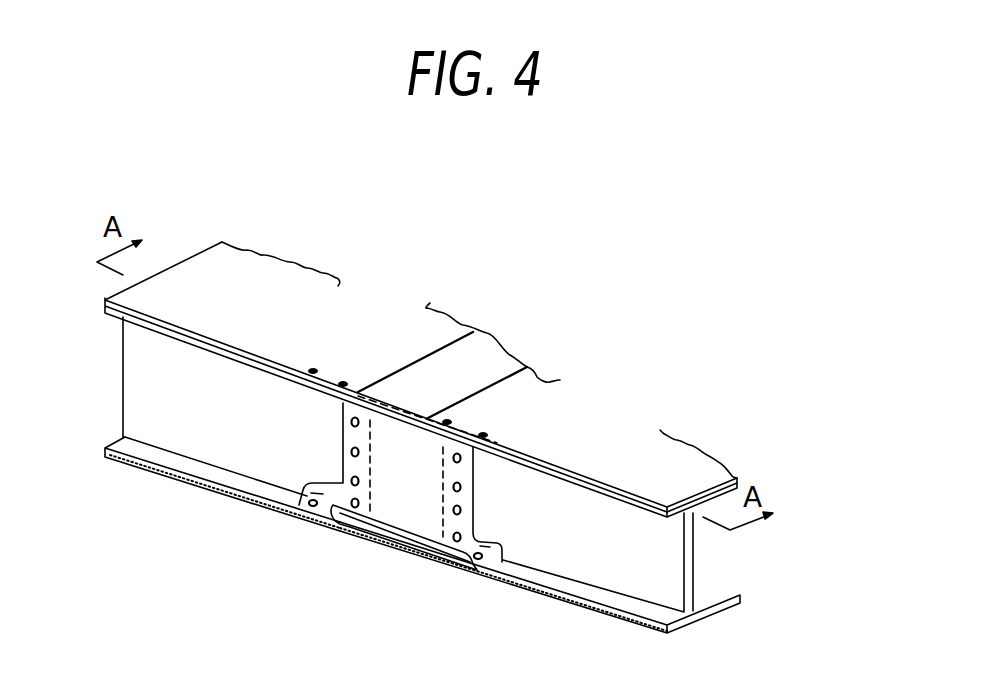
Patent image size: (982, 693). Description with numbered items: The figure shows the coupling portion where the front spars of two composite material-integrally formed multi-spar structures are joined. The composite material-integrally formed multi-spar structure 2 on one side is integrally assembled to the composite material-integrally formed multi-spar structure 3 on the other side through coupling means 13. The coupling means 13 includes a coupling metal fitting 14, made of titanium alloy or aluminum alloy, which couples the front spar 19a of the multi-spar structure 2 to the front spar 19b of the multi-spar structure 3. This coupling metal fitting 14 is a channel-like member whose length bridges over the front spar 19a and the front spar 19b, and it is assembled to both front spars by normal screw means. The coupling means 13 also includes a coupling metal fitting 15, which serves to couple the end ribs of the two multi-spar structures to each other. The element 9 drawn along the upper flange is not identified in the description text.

The composite material-integrally formed multi-spar structure 2 is at (122, 393).
The composite material-integrally formed multi-spar structure 3 is at (658, 557).
The upper flange reinforcing plate 9 is at (298, 283).
The coupling means 13 is at (518, 325).
The coupling metal fitting 14 is at (487, 480).
The coupling metal fitting 15 is at (474, 352).
The front spar 19a is at (268, 465).
The front spar 19b is at (610, 575).